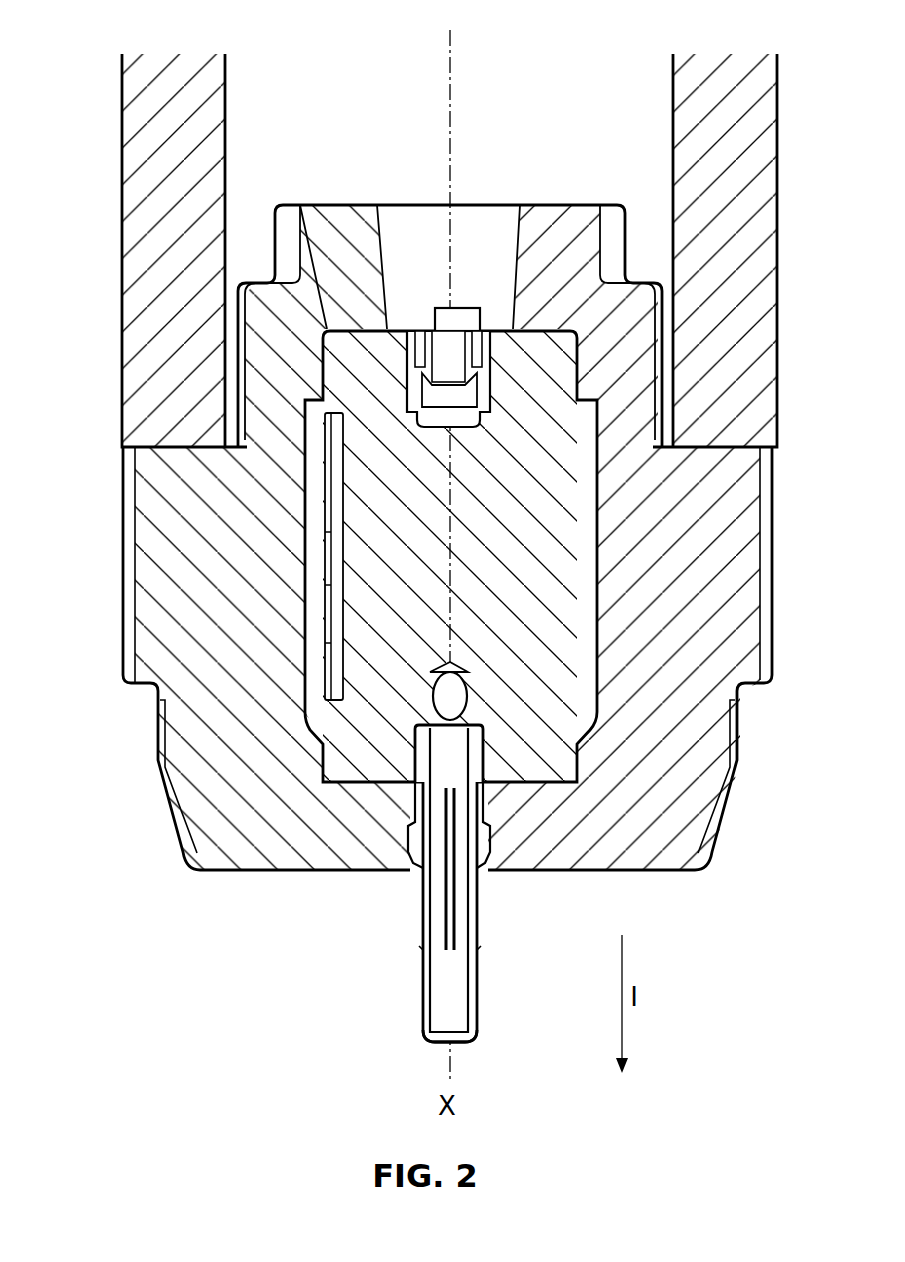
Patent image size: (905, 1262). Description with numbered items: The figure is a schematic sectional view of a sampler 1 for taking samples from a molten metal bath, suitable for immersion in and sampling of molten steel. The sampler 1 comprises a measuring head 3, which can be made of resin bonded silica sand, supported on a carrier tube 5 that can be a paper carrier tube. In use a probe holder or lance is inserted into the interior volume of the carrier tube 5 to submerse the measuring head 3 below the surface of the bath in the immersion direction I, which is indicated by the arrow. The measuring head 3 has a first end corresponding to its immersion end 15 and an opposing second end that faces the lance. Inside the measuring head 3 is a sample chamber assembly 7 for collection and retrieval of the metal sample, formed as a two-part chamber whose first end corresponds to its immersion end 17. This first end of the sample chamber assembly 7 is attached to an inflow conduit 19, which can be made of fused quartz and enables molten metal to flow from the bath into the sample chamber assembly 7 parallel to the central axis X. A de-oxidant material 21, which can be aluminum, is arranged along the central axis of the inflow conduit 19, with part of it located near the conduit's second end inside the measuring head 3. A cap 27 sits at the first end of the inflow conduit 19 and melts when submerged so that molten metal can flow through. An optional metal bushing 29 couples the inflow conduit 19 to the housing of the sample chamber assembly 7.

The sampler 1 is at (545, 105).
The measuring head 3 is at (648, 393).
The carrier tube 5 is at (197, 140).
The sample chamber assembly 7 is at (377, 433).
The immersion end of the measuring head 15 is at (722, 830).
The immersion end of the sample chamber assembly 17 is at (135, 572).
The inflow conduit 19 is at (477, 888).
The de-oxidant material 21 is at (453, 918).
The cap 27 is at (423, 1022).
The metal bushing 29 is at (420, 745).